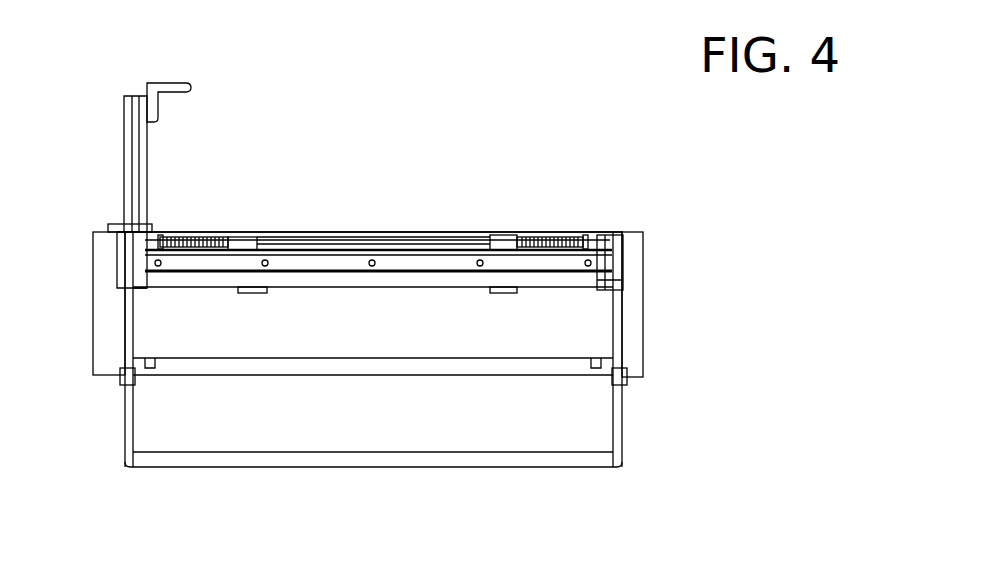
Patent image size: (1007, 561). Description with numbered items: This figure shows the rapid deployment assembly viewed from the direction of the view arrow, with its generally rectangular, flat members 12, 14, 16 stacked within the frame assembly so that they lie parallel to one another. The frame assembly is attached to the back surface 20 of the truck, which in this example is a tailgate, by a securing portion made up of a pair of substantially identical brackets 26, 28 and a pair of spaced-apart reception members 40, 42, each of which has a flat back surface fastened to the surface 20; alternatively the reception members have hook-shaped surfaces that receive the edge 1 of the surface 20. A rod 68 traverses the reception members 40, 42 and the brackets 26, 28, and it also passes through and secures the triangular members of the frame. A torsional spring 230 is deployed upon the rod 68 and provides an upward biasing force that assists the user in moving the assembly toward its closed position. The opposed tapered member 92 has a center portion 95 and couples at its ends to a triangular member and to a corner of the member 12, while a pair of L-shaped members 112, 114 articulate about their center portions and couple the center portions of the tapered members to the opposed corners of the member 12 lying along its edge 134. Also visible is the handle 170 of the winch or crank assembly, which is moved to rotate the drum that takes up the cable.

The edge 1 is at (378, 238).
The member 12 is at (422, 450).
The member 14 is at (292, 360).
The member 16 is at (312, 270).
The back surface 20 is at (632, 302).
The bracket 26 is at (157, 232).
The bracket 28 is at (610, 235).
The reception member 40 is at (243, 240).
The reception member 42 is at (503, 240).
The rod 68 is at (385, 232).
The member 92 is at (128, 325).
The center portion 95 is at (617, 330).
The L-shaped member 112 is at (128, 422).
The L-shaped member 114 is at (617, 413).
The edge 134 is at (282, 462).
The handle 170 is at (168, 83).
The torsional spring 230 is at (190, 237).